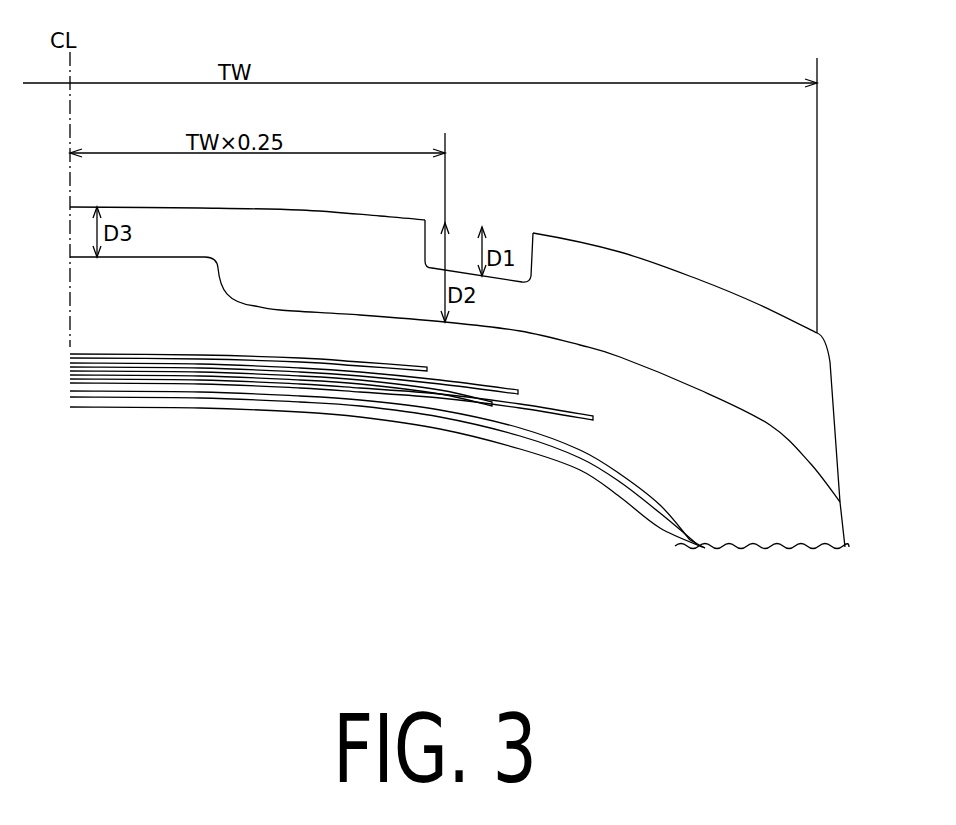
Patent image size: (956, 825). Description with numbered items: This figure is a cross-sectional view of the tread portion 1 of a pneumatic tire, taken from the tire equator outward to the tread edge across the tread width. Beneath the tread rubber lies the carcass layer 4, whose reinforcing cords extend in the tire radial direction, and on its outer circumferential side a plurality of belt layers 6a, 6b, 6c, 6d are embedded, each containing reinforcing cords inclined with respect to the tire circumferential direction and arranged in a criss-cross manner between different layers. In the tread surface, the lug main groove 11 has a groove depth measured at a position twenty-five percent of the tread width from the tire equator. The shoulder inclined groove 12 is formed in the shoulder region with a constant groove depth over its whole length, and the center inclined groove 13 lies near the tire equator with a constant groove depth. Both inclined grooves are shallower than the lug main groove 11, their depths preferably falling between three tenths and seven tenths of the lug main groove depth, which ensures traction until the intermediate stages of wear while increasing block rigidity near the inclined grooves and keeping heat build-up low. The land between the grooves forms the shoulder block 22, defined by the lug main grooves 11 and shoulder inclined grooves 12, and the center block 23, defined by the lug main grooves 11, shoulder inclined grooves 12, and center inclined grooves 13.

The tread portion 1 is at (622, 251).
The carcass layer 4 is at (663, 517).
The belt layer 6a is at (481, 407).
The belt layer 6b is at (583, 421).
The belt layer 6c is at (513, 393).
The belt layer 6d is at (420, 370).
The lug main groove 11 is at (705, 389).
The shoulder inclined groove 12 is at (529, 233).
The center inclined groove 13 is at (176, 257).
The shoulder block 22 is at (670, 303).
The center block 23 is at (348, 240).